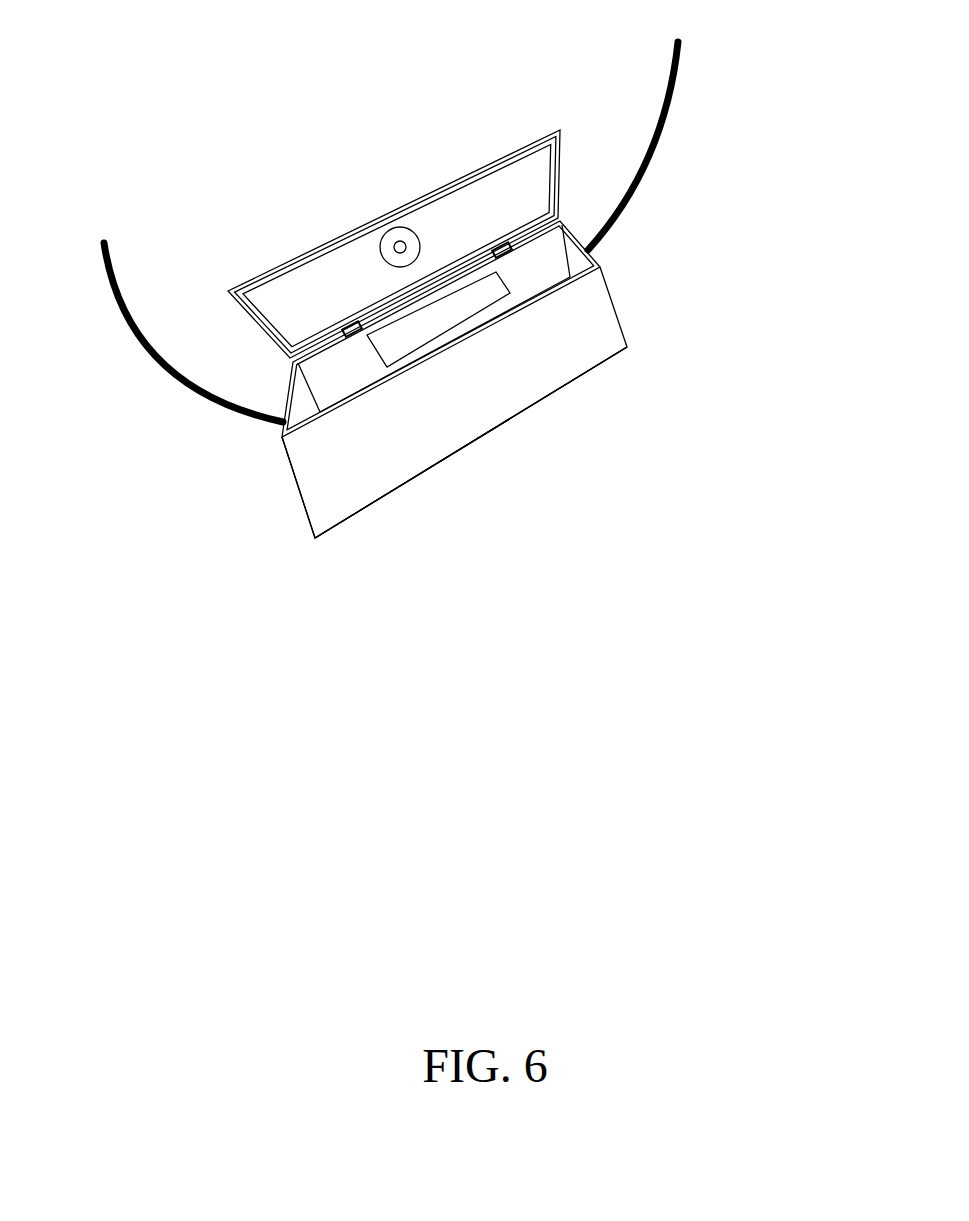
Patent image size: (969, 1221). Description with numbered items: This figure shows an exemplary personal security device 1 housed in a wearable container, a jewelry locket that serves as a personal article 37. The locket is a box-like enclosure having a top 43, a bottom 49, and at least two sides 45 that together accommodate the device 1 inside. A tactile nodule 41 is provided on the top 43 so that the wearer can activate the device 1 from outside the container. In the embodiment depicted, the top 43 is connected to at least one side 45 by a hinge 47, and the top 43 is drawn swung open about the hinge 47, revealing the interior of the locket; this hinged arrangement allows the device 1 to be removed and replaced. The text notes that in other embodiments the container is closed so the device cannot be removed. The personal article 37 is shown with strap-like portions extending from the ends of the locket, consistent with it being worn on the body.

The device 1 is at (477, 297).
The personal article 37 is at (160, 365).
The tactile nodule 41 is at (400, 242).
The top 43 is at (300, 288).
The side 45 is at (435, 437).
The hinge 47 is at (508, 292).
The bottom 49 is at (342, 524).